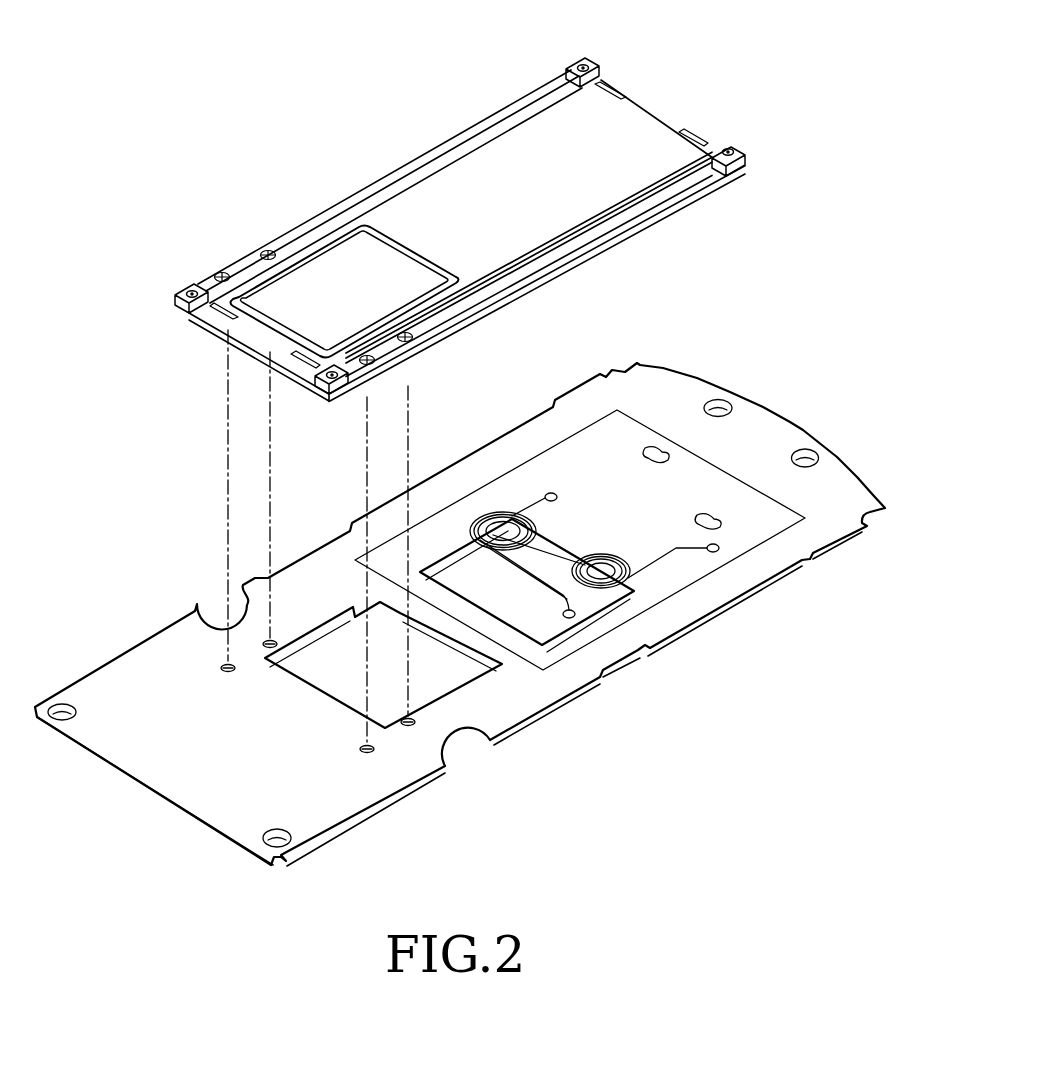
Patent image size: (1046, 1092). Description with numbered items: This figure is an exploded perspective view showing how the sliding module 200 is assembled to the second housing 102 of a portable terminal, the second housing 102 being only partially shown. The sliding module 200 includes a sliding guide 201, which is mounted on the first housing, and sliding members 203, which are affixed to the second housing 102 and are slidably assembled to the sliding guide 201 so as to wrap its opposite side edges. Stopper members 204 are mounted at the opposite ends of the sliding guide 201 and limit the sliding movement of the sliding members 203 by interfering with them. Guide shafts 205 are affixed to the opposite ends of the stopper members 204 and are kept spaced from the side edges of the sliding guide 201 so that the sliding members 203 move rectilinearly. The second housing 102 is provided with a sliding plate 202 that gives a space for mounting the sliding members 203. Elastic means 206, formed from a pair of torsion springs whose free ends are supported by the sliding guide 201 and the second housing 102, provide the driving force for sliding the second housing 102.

The sliding module 200 is at (206, 369).
The sliding guide 201 is at (462, 183).
The sliding plate 202 is at (470, 703).
The sliding members 203 is at (237, 270).
The stopper members 204 is at (647, 97).
The guide shafts 205 is at (336, 210).
The elastic means 206 is at (621, 593).
The second housing 102 is at (744, 601).